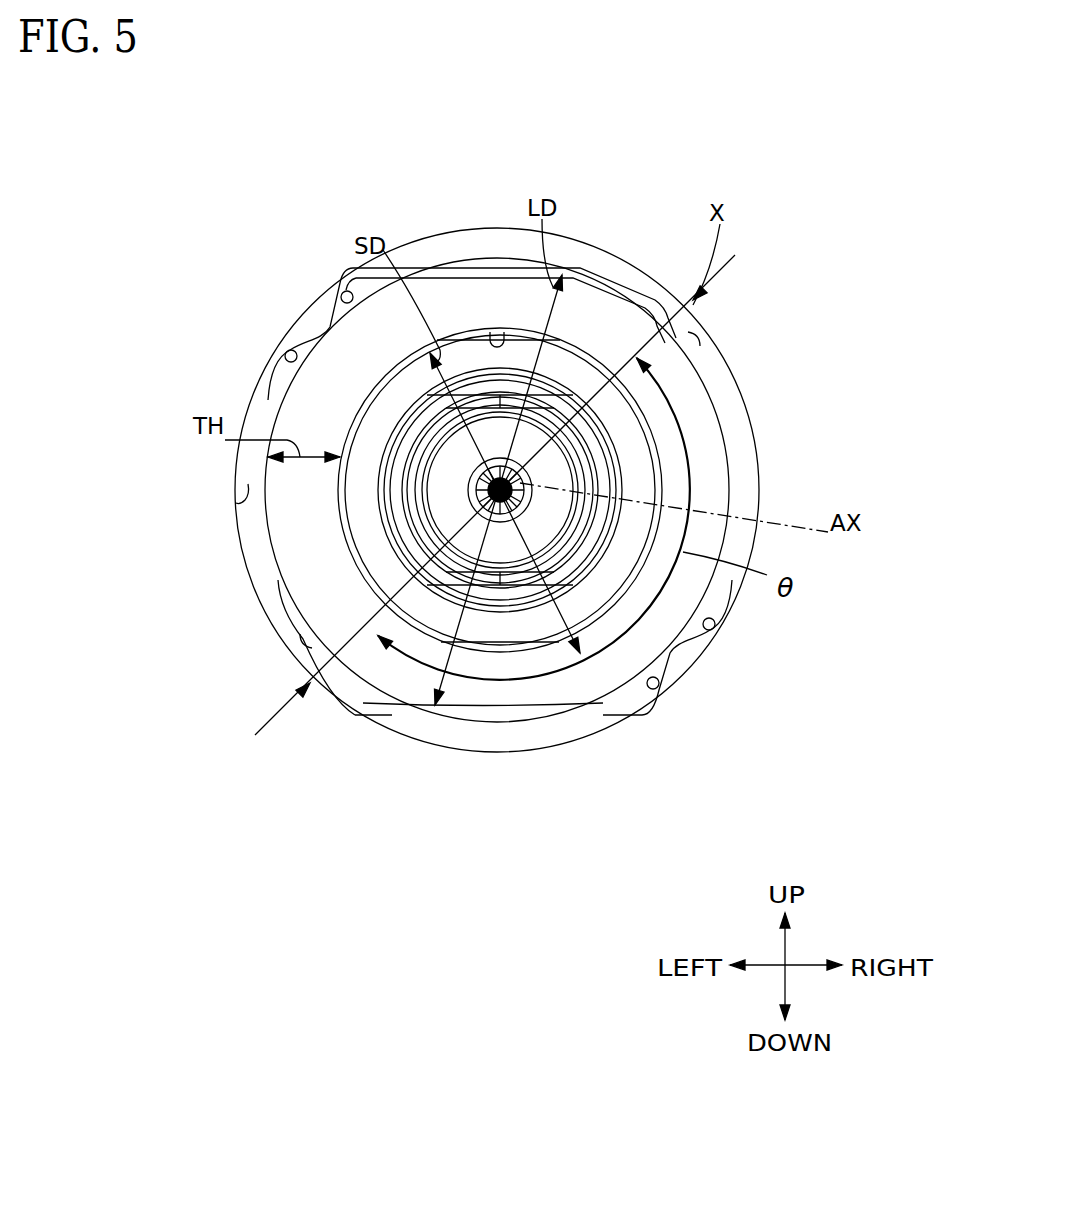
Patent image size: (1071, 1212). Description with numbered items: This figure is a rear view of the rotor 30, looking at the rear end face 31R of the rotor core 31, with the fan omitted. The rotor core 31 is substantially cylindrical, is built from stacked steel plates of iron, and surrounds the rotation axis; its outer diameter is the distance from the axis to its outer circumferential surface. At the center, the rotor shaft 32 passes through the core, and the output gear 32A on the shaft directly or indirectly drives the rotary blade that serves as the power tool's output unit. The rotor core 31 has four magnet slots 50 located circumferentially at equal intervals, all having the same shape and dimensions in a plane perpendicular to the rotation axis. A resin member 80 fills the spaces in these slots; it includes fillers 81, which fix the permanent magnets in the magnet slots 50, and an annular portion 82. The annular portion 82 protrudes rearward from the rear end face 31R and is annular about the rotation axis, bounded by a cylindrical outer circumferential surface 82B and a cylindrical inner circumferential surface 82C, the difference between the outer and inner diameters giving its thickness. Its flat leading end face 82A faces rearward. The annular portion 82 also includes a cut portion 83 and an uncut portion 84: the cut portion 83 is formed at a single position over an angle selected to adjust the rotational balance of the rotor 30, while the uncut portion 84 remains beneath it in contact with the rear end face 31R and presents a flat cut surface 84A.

The rotor 30 is at (795, 237).
The rotor core 31 is at (430, 243).
The rear end face 31R is at (236, 503).
The rotor shaft 32 is at (398, 490).
The output gear 32A is at (443, 510).
The magnet slots 50 is at (347, 300).
The resin member 80 is at (580, 717).
The fillers 81 is at (643, 293).
The annular portion 82 is at (489, 488).
The leading end face 82A is at (337, 343).
The outer circumferential surface 82B is at (580, 268).
The inner circumferential surface 82C is at (497, 322).
The cut portion 83 is at (718, 415).
The uncut portion 84 is at (605, 546).
The cut surface 84A is at (713, 477).